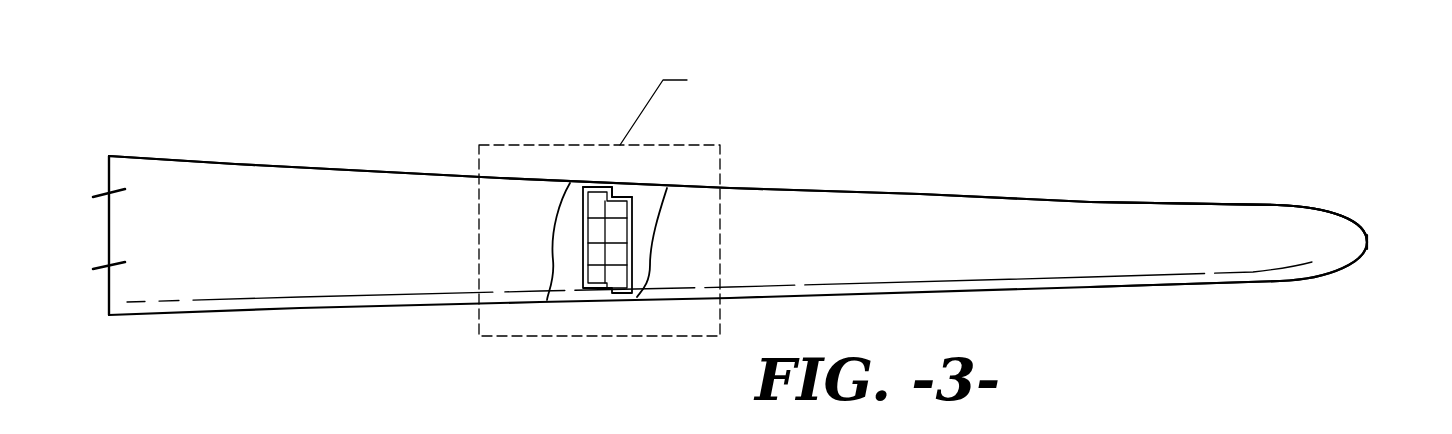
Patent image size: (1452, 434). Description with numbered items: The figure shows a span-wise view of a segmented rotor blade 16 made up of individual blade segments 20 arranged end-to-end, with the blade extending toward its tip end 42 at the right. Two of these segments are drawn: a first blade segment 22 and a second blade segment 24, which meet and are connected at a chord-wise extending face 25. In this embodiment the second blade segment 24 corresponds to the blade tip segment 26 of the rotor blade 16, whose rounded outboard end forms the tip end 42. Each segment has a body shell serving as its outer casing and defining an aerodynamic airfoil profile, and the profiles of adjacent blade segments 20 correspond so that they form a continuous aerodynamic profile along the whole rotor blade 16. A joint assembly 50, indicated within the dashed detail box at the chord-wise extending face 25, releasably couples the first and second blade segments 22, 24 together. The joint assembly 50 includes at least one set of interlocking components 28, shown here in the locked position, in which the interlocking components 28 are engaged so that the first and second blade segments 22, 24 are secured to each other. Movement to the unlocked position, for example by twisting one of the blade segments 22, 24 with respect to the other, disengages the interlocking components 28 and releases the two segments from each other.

The rotor blade 16 is at (1093, 128).
The blade segments 20 is at (202, 158).
The first blade segment 22 is at (313, 165).
The second blade segment 24 is at (1120, 200).
The chord-wise extending face 25 is at (605, 186).
The blade tip segment 26 is at (1308, 236).
The interlocking components 28 is at (582, 273).
The tip end 42 is at (1368, 240).
The joint assembly 50 is at (660, 170).